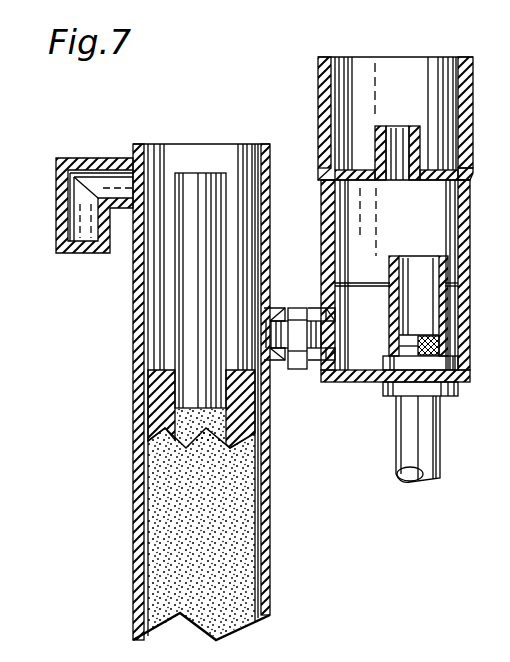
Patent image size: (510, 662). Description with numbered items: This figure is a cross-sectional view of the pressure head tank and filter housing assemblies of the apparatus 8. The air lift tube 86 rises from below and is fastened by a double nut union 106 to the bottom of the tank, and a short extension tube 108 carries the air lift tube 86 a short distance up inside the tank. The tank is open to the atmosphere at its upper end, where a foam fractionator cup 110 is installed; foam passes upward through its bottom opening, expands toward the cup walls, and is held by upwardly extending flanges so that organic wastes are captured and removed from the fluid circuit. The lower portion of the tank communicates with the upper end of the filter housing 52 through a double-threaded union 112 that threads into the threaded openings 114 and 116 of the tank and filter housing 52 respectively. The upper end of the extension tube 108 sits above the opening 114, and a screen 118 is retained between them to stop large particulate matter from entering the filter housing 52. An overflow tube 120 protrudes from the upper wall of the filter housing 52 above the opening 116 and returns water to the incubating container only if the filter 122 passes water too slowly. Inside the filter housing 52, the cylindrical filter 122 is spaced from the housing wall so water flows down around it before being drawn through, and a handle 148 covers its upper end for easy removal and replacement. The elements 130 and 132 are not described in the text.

The valve body assembly 8 is at (472, 343).
The outer tube 52 is at (128, 549).
The delivery tube 86 is at (388, 425).
The nut 106 is at (452, 387).
The inner sleeve 108 is at (440, 302).
The cap 110 is at (468, 74).
The connector 112 is at (310, 314).
The threaded fitting 114 is at (322, 332).
The flange 116 is at (262, 350).
The partition 118 is at (396, 256).
The elbow 120 is at (94, 184).
The granular material 122 is at (240, 503).
The element 130 is at (494, 632).
The element 132 is at (509, 655).
The inner tube 148 is at (205, 255).